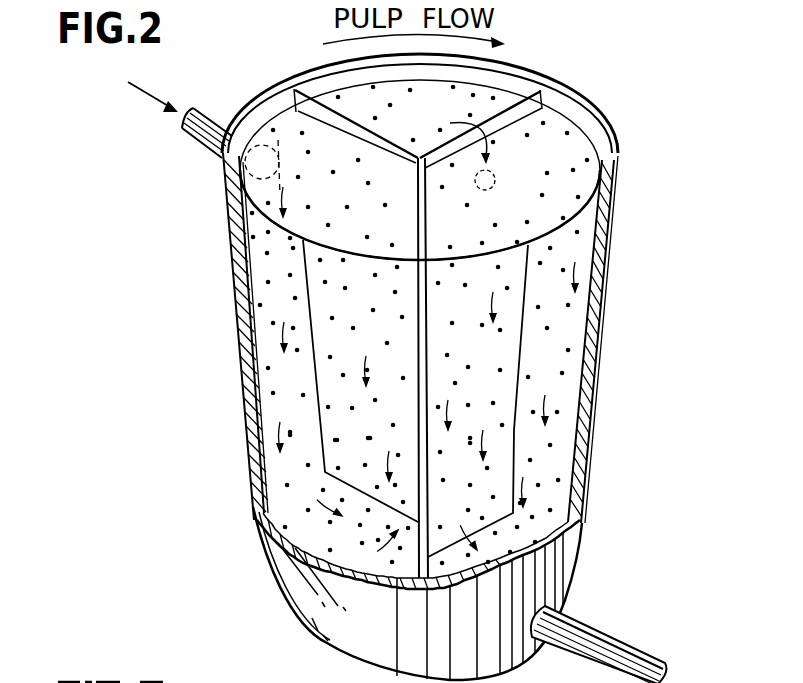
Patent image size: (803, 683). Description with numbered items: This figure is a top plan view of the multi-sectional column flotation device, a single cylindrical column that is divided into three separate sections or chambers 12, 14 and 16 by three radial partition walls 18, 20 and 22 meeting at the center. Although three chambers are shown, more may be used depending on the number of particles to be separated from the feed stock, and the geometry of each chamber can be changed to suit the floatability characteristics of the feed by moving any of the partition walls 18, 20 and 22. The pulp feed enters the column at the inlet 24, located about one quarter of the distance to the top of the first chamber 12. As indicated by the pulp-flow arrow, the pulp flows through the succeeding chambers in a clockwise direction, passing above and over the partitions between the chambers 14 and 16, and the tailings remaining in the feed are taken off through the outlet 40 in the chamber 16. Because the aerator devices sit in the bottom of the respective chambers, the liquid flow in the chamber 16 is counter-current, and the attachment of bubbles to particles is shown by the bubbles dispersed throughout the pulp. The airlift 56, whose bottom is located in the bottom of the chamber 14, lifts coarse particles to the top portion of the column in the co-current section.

The chamber 12 is at (262, 99).
The chamber 14 is at (438, 126).
The chamber 16 is at (604, 207).
The partition wall 18 is at (277, 133).
The partition wall 20 is at (548, 93).
The partition wall 22 is at (442, 216).
The inlet 24 is at (208, 152).
The outlet 40 is at (622, 648).
The airlift 56 is at (502, 184).